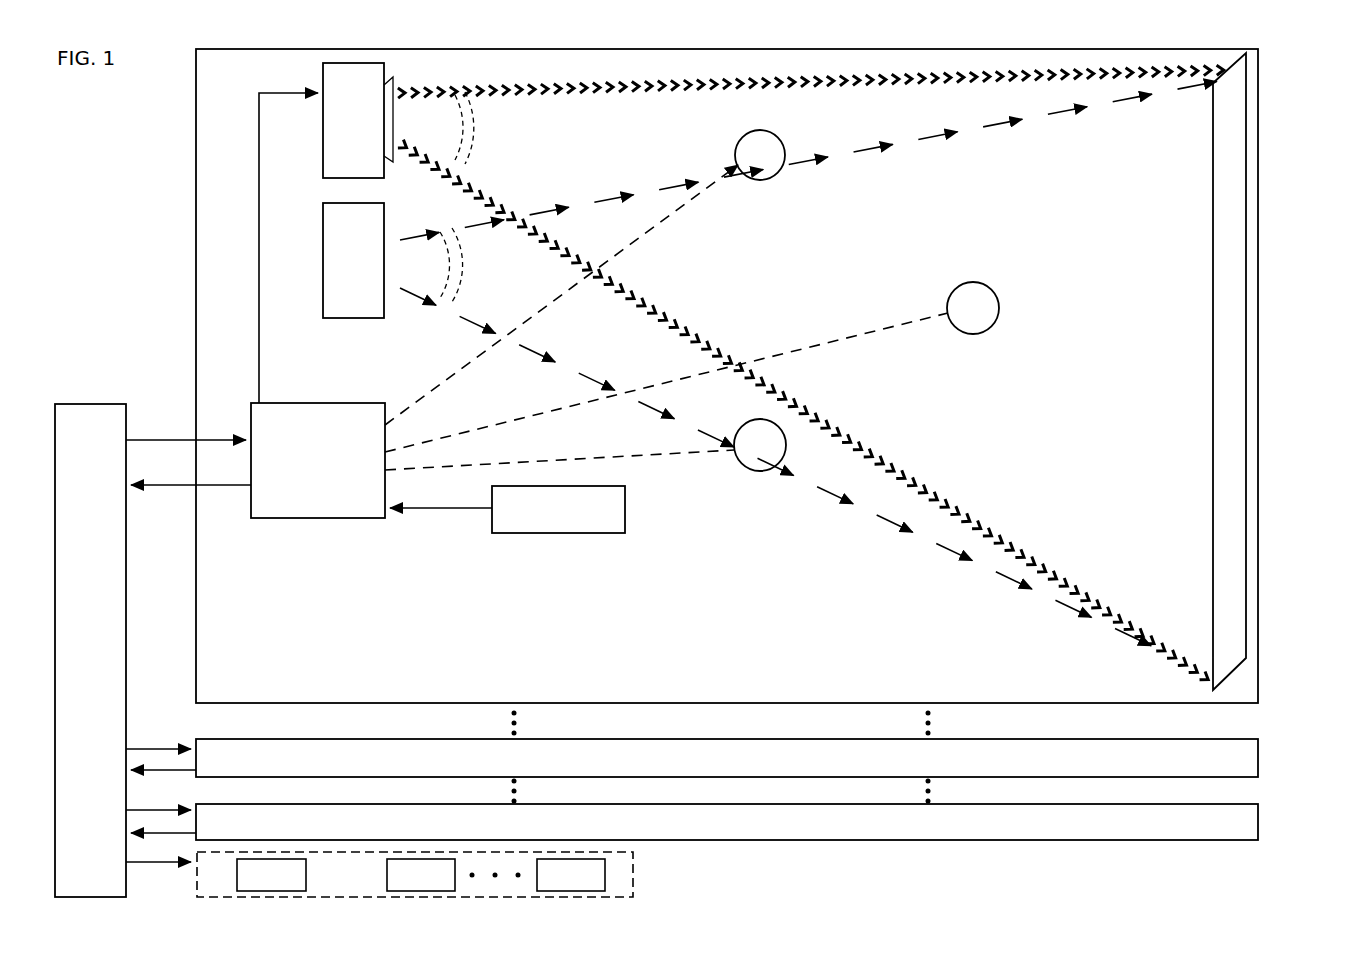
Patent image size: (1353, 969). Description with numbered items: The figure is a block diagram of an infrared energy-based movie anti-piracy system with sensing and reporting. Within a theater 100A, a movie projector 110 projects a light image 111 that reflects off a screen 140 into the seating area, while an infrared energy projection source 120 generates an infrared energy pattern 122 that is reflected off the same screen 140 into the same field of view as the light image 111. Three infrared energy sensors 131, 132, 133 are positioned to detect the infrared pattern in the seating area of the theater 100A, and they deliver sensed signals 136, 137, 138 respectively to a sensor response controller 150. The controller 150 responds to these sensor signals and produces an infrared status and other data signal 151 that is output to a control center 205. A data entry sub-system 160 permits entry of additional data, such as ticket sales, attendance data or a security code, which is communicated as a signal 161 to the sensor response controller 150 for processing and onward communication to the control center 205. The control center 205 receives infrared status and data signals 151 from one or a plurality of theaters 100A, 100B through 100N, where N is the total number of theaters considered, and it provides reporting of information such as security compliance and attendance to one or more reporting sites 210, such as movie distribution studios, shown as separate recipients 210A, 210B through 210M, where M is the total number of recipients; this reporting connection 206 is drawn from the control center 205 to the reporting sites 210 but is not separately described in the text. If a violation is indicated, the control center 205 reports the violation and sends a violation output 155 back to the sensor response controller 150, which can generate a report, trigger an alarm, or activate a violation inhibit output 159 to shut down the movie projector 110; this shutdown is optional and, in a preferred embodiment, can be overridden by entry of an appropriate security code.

The theater 100A is at (196, 185).
The theater 100B is at (1258, 757).
The theater 100N is at (1258, 818).
The movie projector 110 is at (323, 127).
The light image 111 is at (478, 125).
The infrared energy projection source 120 is at (323, 258).
The infrared energy pattern 122 is at (462, 257).
The infrared energy sensor 131 is at (760, 180).
The infrared energy sensor 132 is at (973, 334).
The infrared energy sensor 133 is at (745, 470).
The sensed signal 136 is at (462, 372).
The sensed signal 137 is at (573, 408).
The sensed signal 138 is at (628, 458).
The screen 140 is at (1213, 303).
The sensor response controller 150 is at (251, 508).
The infrared status signal 151 is at (150, 485).
The violation output 155 is at (150, 440).
The violation inhibit output 159 is at (259, 228).
The data entry sub-system 160 is at (492, 517).
The signal 161 is at (410, 508).
The control center 205 is at (108, 472).
The control signal 206 is at (136, 862).
The reporting sites 210 is at (455, 874).
The recipient 210A is at (271, 875).
The recipient 210B is at (421, 875).
The recipient 210M is at (571, 875).